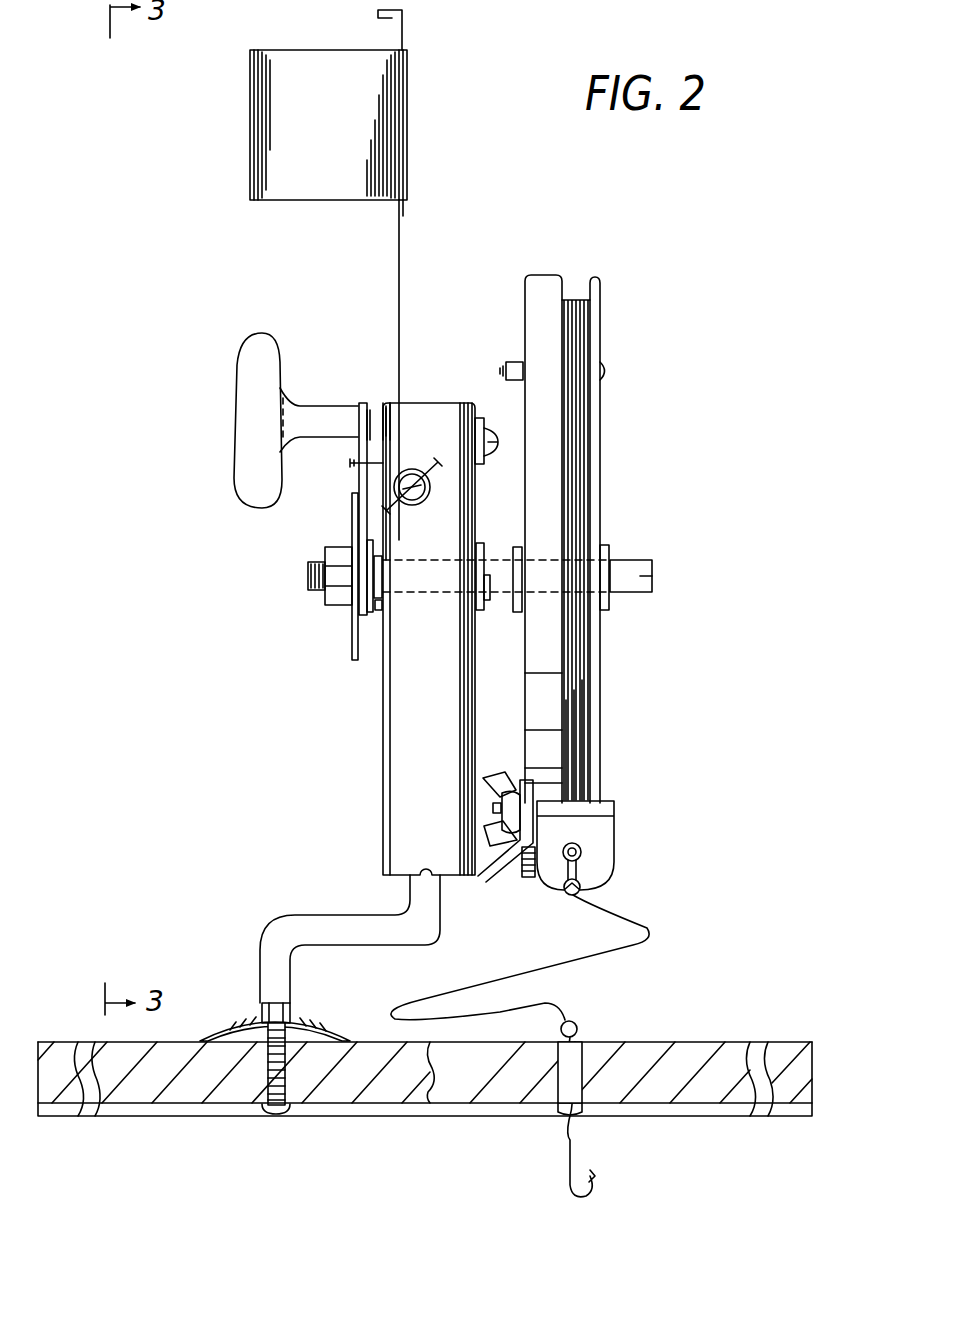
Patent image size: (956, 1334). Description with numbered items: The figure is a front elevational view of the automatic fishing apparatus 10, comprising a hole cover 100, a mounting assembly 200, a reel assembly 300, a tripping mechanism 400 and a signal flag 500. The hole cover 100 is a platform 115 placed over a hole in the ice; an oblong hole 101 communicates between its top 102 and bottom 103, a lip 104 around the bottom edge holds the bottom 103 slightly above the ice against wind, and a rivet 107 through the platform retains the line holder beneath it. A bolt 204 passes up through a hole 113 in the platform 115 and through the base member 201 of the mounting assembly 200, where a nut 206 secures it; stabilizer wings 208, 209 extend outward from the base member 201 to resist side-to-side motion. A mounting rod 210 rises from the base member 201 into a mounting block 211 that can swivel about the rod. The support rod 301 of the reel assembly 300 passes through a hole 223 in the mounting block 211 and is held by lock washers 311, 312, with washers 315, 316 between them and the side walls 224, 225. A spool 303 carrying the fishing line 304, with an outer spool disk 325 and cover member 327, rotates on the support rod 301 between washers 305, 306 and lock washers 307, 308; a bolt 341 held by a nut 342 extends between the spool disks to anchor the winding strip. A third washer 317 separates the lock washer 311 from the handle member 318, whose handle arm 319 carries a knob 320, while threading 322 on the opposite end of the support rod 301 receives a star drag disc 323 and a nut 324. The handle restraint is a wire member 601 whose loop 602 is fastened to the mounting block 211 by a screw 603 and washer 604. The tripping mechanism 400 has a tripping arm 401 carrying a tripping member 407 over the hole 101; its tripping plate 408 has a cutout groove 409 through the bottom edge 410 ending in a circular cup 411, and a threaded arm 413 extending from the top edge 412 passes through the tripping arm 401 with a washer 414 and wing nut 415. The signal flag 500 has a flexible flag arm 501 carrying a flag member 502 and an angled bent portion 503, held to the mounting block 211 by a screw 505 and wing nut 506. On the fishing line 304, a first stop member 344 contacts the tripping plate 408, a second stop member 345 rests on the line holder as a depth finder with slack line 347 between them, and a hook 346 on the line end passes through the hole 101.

The automatic fishing apparatus 10 is at (742, 320).
The hole cover 100 is at (425, 1066).
The hole 101 is at (603, 1032).
The top 102 is at (698, 1043).
The bottom 103 is at (716, 1117).
The lip 104 is at (52, 1119).
The rivet 107 is at (560, 1112).
The hole 113 is at (296, 1085).
The platform 115 is at (650, 1050).
The mounting assembly 200 is at (474, 591).
The base member 201 is at (259, 1056).
The bolt 204 is at (270, 1110).
The nut 206 is at (290, 1008).
The stabilizer wing 208 is at (215, 1032).
The stabilizer wing 209 is at (307, 1032).
The mounting rod 210 is at (280, 922).
The mounting block 211 is at (420, 410).
The hole 223 is at (445, 600).
The side wall 224 is at (386, 410).
The side wall 225 is at (475, 672).
The reel assembly 300 is at (464, 552).
The support rod 301 is at (652, 580).
The spool 303 is at (606, 506).
The fishing line 304 is at (576, 478).
The washer 305 is at (607, 560).
The washer 306 is at (520, 555).
The first lock washer 307 is at (614, 565).
The second lock washer 308 is at (524, 550).
The lock washer 311 is at (368, 556).
The lock washer 312 is at (476, 548).
The first washer 315 is at (377, 612).
The second washer 316 is at (468, 655).
The third washer 317 is at (362, 603).
The handle member 318 is at (256, 391).
The handle arm 319 is at (361, 440).
The knob 320 is at (272, 340).
The threading 322 is at (308, 568).
The star drag disc 323 is at (352, 496).
The nut 324 is at (335, 600).
The outer spool disk 325 is at (602, 346).
The cover member 327 is at (557, 280).
The bolt 341 is at (609, 378).
The nut 342 is at (512, 360).
The first stop member 344 is at (580, 880).
The second stop member 345 is at (577, 1022).
The hook 346 is at (575, 1165).
The slack line 347 is at (545, 940).
The tripping mechanism 400 is at (480, 884).
The tripping arm 401 is at (508, 857).
The tripping member 407 is at (571, 831).
The tripping plate 408 is at (605, 825).
The cutout groove 409 is at (568, 895).
The bottom edge 410 is at (582, 890).
The circular cup 411 is at (582, 852).
The top edge 412 is at (625, 812).
The threaded arm 413 is at (496, 812).
The washer 414 is at (520, 782).
The wing nut 415 is at (488, 786).
The signal flag 500 is at (428, 208).
The flag arm 501 is at (401, 275).
The flag member 502 is at (275, 118).
The angled bent portion 503 is at (378, 20).
The screw 505 is at (430, 475).
The wing nut 506 is at (425, 504).
The wire member 601 is at (350, 462).
The loop 602 is at (451, 388).
The screw 603 is at (482, 495).
The washer 604 is at (488, 428).